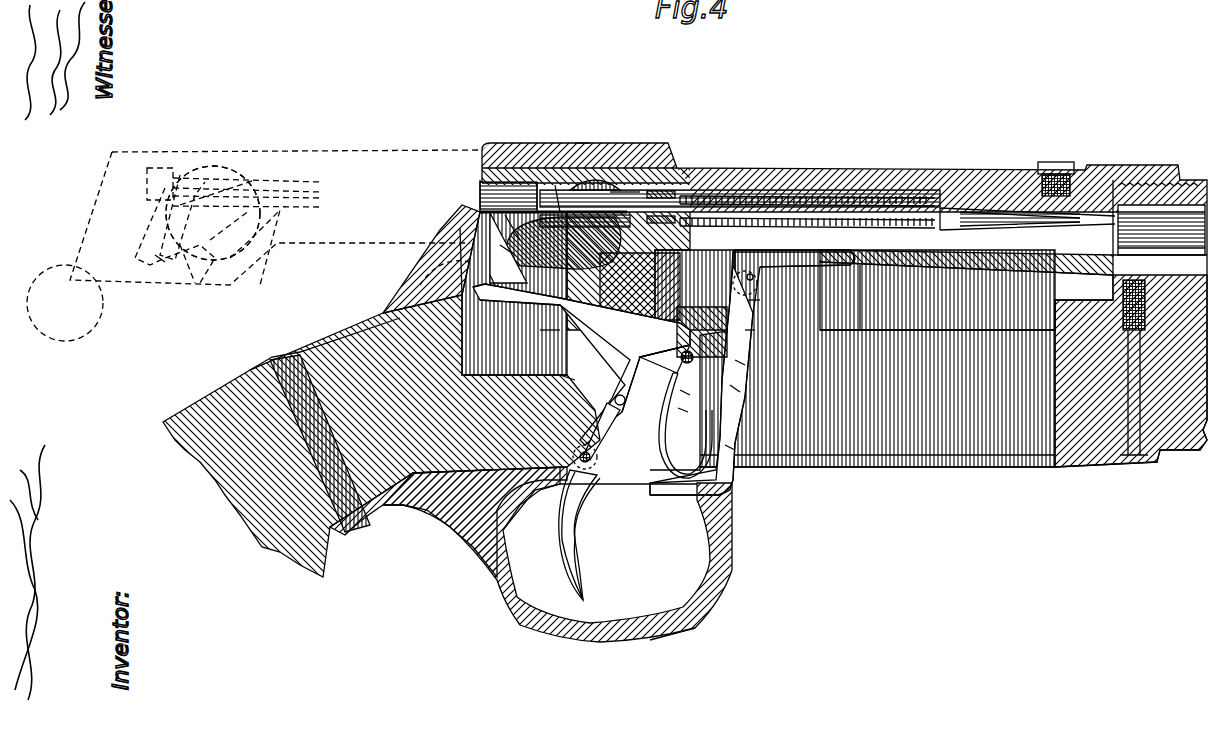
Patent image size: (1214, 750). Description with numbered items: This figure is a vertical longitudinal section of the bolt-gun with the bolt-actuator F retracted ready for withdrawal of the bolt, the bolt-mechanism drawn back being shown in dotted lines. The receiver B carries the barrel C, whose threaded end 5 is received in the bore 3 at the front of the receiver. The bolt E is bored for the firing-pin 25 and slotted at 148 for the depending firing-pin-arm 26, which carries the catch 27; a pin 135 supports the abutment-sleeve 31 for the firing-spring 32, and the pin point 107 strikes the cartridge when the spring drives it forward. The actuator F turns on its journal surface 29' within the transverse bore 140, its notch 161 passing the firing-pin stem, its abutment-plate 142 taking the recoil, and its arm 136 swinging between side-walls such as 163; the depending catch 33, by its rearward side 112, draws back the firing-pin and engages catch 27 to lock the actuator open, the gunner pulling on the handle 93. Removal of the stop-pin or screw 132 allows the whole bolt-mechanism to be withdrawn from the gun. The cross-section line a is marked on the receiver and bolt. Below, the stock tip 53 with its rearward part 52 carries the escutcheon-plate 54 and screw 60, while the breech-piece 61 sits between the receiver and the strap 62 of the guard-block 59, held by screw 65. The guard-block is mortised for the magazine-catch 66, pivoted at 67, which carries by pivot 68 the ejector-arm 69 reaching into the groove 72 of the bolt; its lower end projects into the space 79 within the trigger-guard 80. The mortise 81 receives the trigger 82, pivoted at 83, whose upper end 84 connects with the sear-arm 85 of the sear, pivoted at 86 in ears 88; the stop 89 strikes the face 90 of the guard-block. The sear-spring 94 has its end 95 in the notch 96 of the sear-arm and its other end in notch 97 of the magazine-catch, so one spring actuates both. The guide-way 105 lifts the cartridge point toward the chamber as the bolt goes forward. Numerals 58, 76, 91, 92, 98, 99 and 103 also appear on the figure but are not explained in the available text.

The receiver B is at (500, 143).
The barrel C is at (1192, 178).
The bolt E is at (950, 170).
The bolt-actuator F is at (210, 170).
The bore 3 is at (1158, 168).
The threaded end of the barrel 5 is at (1116, 180).
The firing-pin 25 is at (280, 185).
The firing-pin-arm 26 is at (135, 228).
The catch 27 is at (143, 262).
The journal surface 29' is at (557, 150).
The abutment-sleeve 31 is at (672, 185).
The firing-spring 32 is at (865, 195).
The catch 33 is at (160, 258).
The rearward part of the tip 52 is at (868, 470).
The tip of the gun-stock 53 is at (1190, 445).
The escutcheon-plate 54 is at (955, 470).
The lug 58 is at (552, 339).
The guard-block 59 is at (738, 497).
The screw 60 is at (1135, 462).
The breech-piece 61 is at (462, 475).
The strap 62 is at (397, 505).
The screw 65 is at (282, 360).
The magazine-catch 66 is at (663, 497).
The pivot 67 is at (760, 300).
The pivot 68 is at (794, 267).
The ejector-arm 69 is at (851, 297).
The groove 72 is at (966, 296).
The hammer nose 76 is at (730, 450).
The space within the trigger-guard 79 is at (618, 620).
The trigger-guard 80 is at (685, 615).
The mortise 81 is at (600, 480).
The trigger 82 is at (562, 548).
The pivot 83 is at (487, 300).
The upper end of the trigger 84 is at (571, 381).
The sear-arm 85 is at (581, 364).
The pivot 86 is at (514, 293).
The ear 88 is at (628, 285).
The stop 89 is at (668, 335).
The face of the guard-block 90 is at (680, 357).
The notch 91 is at (761, 335).
The notch 92 is at (735, 365).
The handle 93 is at (30, 287).
The sear-spring 94 is at (685, 425).
The end of the sear-spring 95 is at (688, 412).
The notch 96 is at (672, 375).
The notch 97 is at (735, 390).
The pin 98 is at (692, 396).
The receiver wall 99 is at (1012, 470).
The block 103 is at (695, 290).
The guide-way 105 is at (966, 284).
The point of the firing-pin 107 is at (1161, 230).
The rearward side of the actuator-arm 112 is at (150, 228).
The stop-pin or screw 132 is at (1052, 165).
The pin 135 is at (740, 208).
The arm 136 is at (479, 235).
The transverse bore 140 is at (600, 177).
The abutment-plate 142 is at (622, 185).
The slot 148 is at (510, 214).
The notch 161 is at (558, 178).
The side-wall 163 is at (470, 265).
The section line a is at (582, 150).